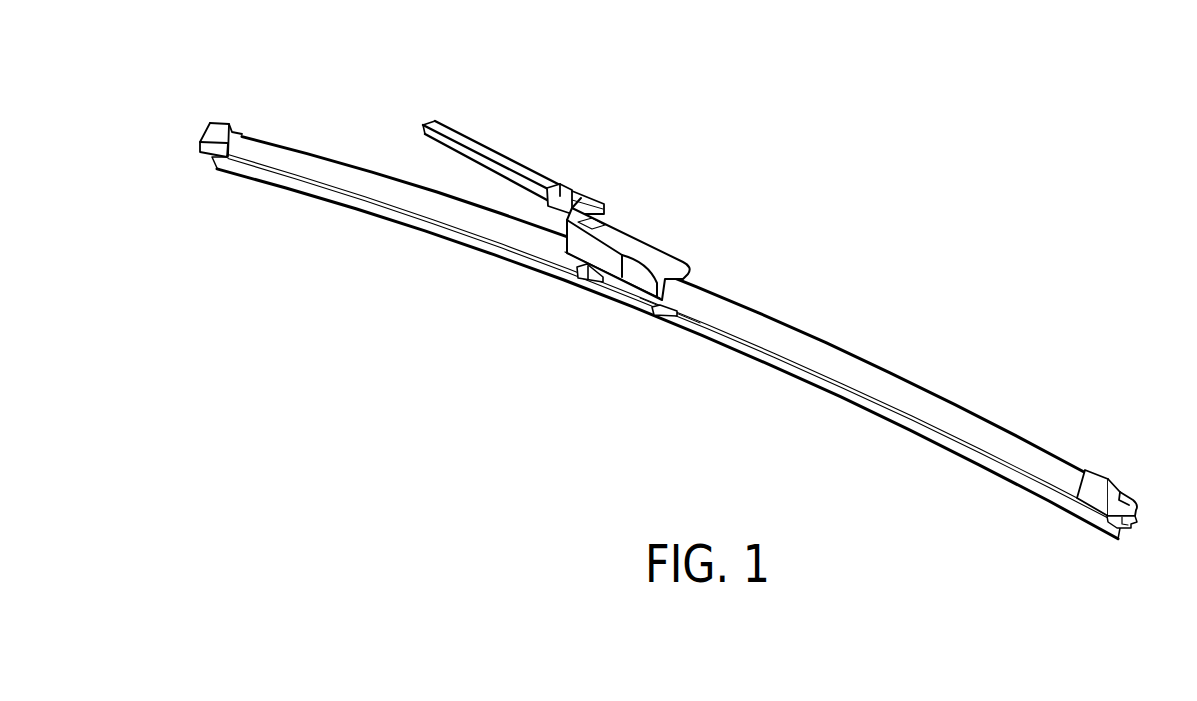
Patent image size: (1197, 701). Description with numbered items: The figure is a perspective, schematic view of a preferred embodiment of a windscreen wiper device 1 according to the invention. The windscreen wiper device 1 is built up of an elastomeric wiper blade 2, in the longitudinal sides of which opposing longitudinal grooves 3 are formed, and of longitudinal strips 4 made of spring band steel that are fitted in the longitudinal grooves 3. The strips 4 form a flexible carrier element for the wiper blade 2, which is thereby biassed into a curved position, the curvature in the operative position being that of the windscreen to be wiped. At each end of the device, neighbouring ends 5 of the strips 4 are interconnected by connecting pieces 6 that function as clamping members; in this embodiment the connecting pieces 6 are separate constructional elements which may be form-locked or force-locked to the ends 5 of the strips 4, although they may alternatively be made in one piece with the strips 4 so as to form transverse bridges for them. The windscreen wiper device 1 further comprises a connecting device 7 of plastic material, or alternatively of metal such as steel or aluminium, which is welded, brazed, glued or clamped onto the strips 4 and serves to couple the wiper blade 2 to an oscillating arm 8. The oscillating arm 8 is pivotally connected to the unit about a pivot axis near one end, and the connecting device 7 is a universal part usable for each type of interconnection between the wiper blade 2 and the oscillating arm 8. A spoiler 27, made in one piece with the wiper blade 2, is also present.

The windscreen wiper device 1 is at (686, 321).
The wiper blade 2 is at (765, 360).
The longitudinal grooves 3 is at (842, 395).
The longitudinal strips 4 is at (700, 332).
The neighbouring ends 5 is at (1127, 520).
The connecting pieces 6 is at (222, 130).
The connecting device 7 is at (605, 229).
The oscillating arm 8 is at (577, 200).
The spoiler 27 is at (325, 165).